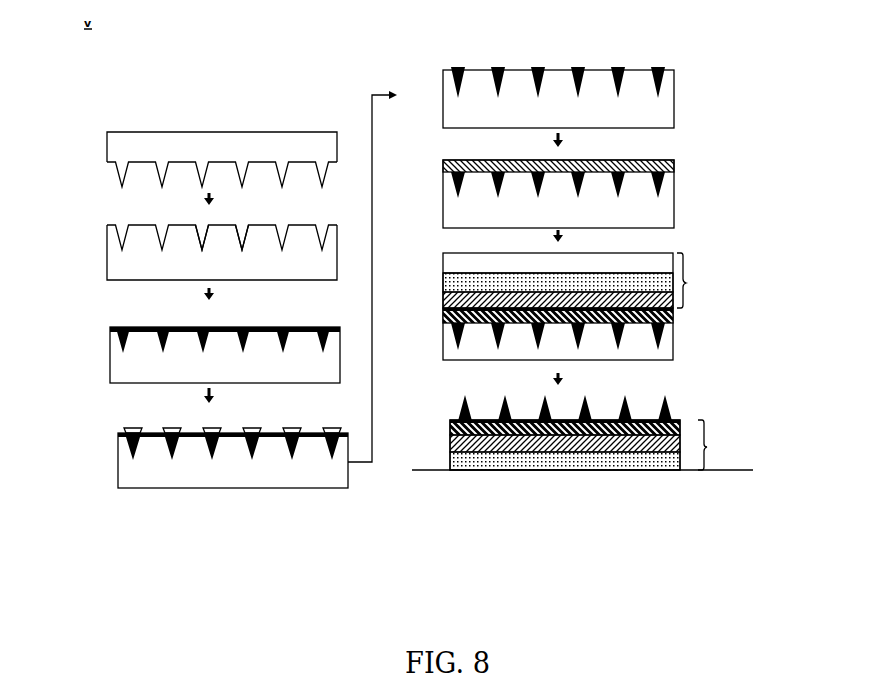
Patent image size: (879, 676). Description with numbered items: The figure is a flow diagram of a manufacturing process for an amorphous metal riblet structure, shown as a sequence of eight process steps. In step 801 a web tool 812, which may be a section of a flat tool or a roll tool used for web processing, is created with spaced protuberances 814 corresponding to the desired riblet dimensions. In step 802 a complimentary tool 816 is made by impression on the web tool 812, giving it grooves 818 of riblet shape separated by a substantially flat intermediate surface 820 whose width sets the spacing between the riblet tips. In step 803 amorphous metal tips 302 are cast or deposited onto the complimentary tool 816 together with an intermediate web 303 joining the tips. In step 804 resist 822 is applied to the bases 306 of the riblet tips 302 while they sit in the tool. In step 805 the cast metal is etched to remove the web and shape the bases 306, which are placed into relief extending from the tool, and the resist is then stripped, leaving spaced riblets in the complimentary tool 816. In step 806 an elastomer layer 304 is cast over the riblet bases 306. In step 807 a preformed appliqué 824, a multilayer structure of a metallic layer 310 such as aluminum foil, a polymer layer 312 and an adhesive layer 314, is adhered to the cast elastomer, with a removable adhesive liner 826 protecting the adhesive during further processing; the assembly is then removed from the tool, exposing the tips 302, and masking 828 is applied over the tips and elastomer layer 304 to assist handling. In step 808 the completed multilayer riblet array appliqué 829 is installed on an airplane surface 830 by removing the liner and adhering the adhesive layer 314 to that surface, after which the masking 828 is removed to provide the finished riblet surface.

The step 801 is at (177, 158).
The step 802 is at (175, 236).
The step 803 is at (170, 342).
The step 804 is at (182, 446).
The step 805 is at (612, 80).
The step 806 is at (721, 205).
The step 807 is at (612, 300).
The step 808 is at (627, 452).
The web tool 812 is at (252, 127).
The spaced protuberances 814 is at (284, 166).
The complimentary tool 816 is at (229, 213).
The grooves 818 is at (200, 228).
The flat intermediate surface 820 is at (143, 224).
The intermediate web 303 is at (258, 327).
The amorphous metal tips 302 is at (250, 346).
The resist 822 is at (250, 428).
The bases 306 is at (619, 60).
The elastomer layer 304 is at (642, 162).
The removable adhesive liner 826 is at (661, 260).
The preformed appliqué 824 is at (688, 283).
The adhesive layer 314 is at (443, 282).
The polymer layer 312 is at (443, 303).
The metallic layer 310 is at (443, 315).
The masking 828 is at (663, 350).
The multilayer riblet array appliqué 829 is at (708, 447).
The airplane surface 830 is at (565, 471).